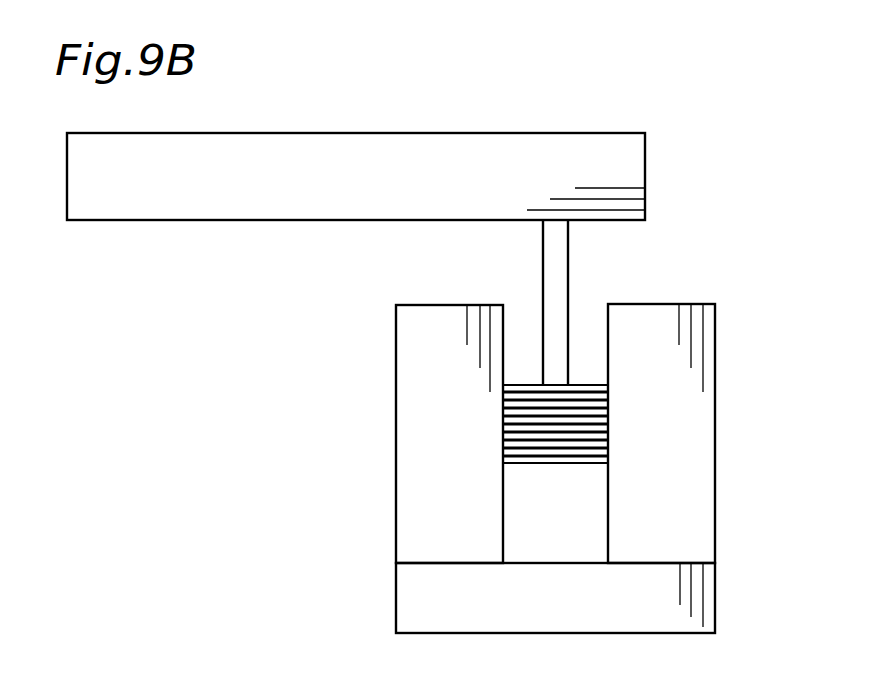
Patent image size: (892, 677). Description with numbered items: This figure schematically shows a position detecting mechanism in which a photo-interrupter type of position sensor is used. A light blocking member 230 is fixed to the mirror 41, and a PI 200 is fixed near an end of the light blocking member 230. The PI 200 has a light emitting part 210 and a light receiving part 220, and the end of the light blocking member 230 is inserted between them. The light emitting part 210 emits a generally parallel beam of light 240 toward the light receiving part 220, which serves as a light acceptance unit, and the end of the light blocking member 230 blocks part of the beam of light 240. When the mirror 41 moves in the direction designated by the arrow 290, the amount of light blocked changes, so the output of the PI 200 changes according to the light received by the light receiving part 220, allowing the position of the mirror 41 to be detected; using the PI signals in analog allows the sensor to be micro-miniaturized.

The mirror 41 is at (158, 210).
The PI (photo-interrupter) 200 is at (396, 597).
The light emitting part 210 is at (427, 323).
The light receiving part 220 is at (668, 310).
The light blocking member 230 is at (542, 255).
The beam of light 240 is at (556, 466).
The arrow 290 is at (681, 151).